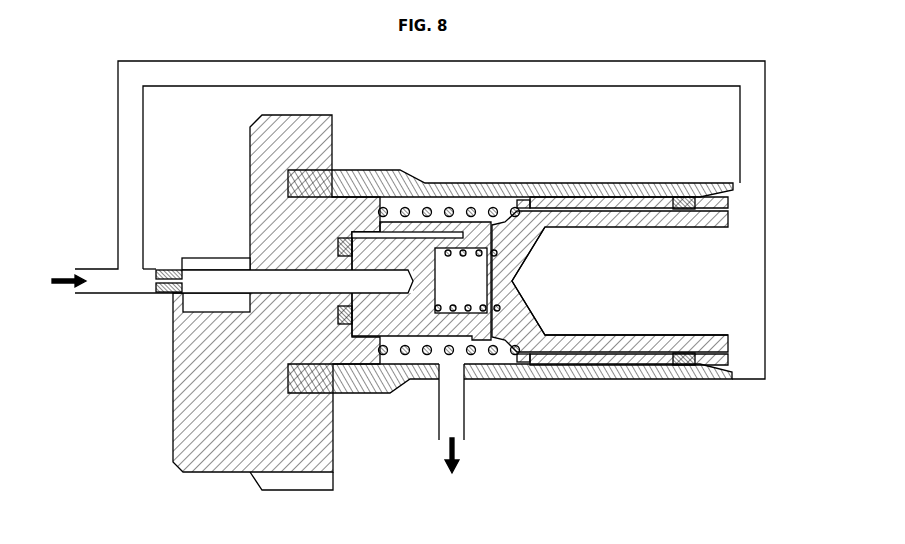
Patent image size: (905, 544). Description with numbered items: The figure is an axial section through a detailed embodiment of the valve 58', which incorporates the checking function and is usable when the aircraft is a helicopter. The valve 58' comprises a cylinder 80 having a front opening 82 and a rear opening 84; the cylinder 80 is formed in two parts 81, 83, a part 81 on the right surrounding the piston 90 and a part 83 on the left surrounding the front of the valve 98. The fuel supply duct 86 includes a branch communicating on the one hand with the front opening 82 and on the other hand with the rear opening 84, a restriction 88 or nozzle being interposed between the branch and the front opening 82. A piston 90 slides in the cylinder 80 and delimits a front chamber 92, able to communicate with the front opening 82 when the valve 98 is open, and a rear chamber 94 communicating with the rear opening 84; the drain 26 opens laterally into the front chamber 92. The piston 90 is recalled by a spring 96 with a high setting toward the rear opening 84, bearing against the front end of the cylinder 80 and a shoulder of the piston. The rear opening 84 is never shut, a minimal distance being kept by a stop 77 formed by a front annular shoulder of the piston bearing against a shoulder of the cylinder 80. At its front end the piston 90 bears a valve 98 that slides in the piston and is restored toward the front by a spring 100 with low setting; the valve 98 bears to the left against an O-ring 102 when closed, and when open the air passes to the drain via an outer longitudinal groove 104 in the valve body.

The drain 26 is at (452, 400).
The valve 58' is at (510, 416).
The stop 77 is at (530, 368).
The cylinder 80 is at (552, 372).
The part 81 is at (655, 367).
The front opening 82 is at (334, 280).
The part 83 is at (254, 387).
The rear opening 84 is at (770, 255).
The fuel supply duct 86 is at (100, 283).
The restriction 88 is at (162, 293).
The piston 90 is at (620, 349).
The front chamber 92 is at (453, 205).
The rear chamber 94 is at (719, 281).
The spring 96 is at (470, 207).
The valve 98 is at (405, 318).
The spring 100 is at (463, 256).
The O-ring 102 is at (345, 236).
The outer longitudinal groove 104 is at (432, 231).